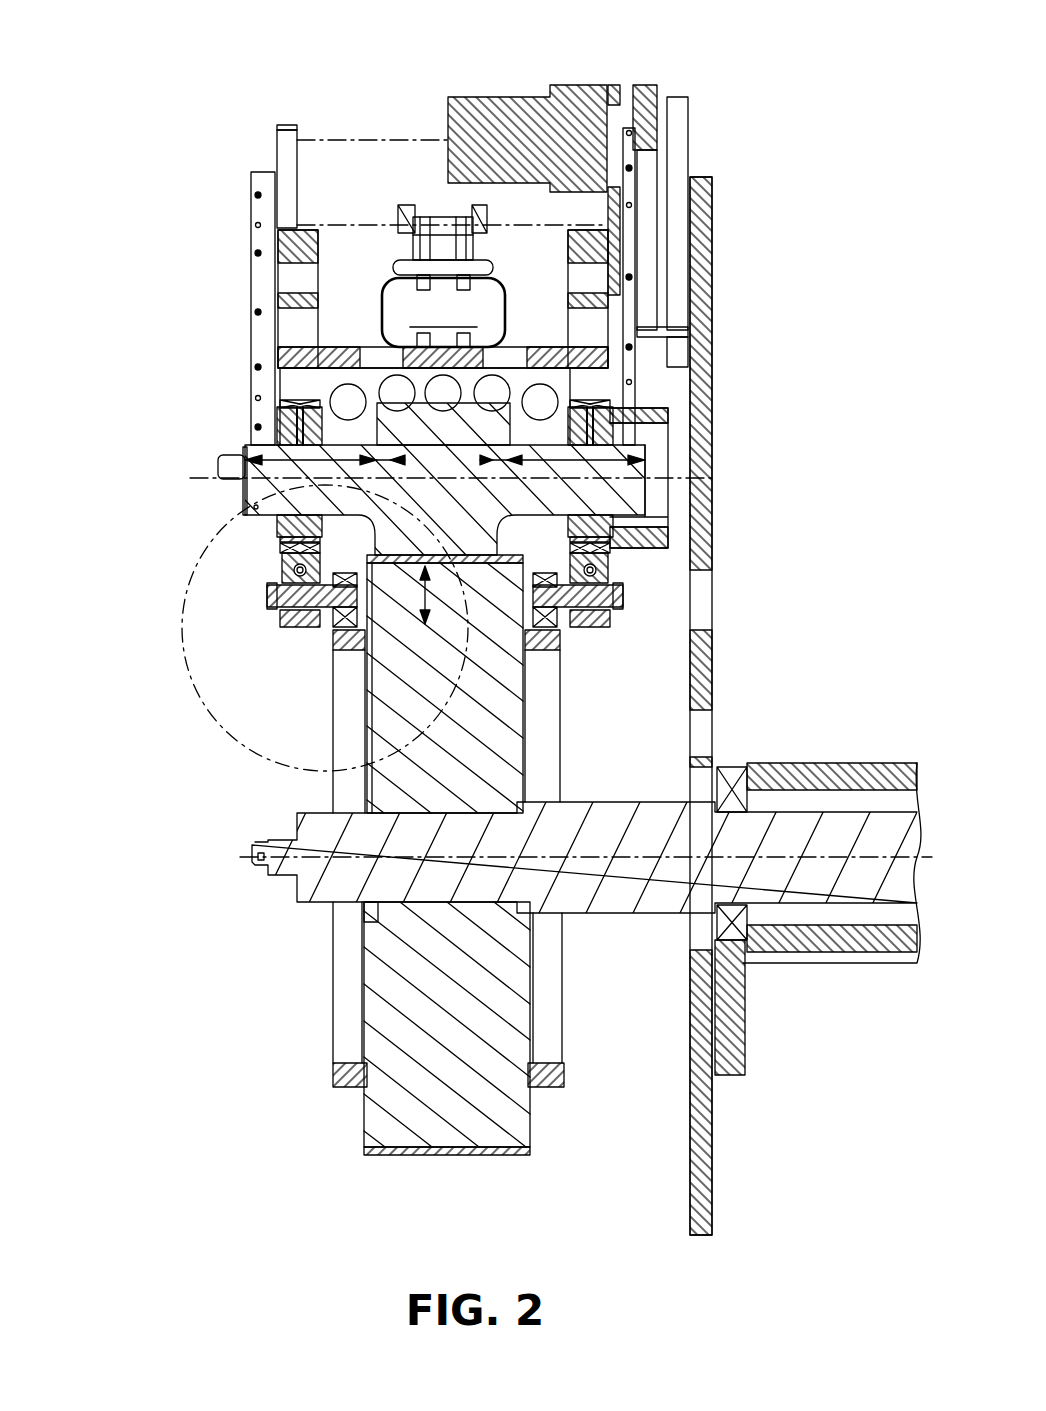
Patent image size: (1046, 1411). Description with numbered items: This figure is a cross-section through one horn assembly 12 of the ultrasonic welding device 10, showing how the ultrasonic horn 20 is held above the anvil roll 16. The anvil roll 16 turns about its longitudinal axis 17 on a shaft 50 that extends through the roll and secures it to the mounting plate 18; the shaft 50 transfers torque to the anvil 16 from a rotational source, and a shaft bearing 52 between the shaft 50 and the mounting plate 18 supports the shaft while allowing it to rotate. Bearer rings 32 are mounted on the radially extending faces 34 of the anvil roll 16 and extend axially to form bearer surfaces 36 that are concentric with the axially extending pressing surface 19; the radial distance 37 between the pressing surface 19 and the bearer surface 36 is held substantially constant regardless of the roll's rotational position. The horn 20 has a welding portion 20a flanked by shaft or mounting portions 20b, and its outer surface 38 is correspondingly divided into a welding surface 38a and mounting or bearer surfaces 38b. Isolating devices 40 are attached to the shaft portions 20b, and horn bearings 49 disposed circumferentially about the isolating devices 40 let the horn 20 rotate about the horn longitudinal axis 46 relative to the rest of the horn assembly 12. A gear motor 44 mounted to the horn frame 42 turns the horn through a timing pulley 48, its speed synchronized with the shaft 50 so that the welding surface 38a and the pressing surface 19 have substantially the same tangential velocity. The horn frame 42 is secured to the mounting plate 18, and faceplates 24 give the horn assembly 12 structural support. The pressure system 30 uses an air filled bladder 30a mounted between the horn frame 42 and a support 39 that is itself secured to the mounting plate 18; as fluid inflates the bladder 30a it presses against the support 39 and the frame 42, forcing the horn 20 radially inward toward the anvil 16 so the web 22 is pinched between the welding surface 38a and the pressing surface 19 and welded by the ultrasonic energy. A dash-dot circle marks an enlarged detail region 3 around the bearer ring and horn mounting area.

The ultrasonic welding device 10 is at (168, 152).
The horn assembly 12 is at (278, 357).
The anvil roll 16 is at (450, 1157).
The longitudinal axis 17 is at (248, 863).
The mounting plate 18 is at (712, 263).
The axially extending pressing surface 19 is at (622, 548).
The ultrasonic horn 20 is at (528, 479).
The welding portion 20a is at (445, 461).
The mounting portions 20b is at (247, 447).
The web 22 is at (243, 490).
The faceplates 24 is at (278, 338).
The pressure system 30 is at (406, 197).
The air filled bladder 30a is at (384, 277).
The bearer rings 32 is at (333, 652).
The radially extending faces 34 is at (366, 1095).
The bearer surfaces 36 is at (330, 605).
The radial distance 37 is at (368, 662).
The outer surface 38 is at (432, 562).
The welding surface 38a is at (640, 490).
The mounting surfaces 38b is at (247, 513).
The support 39 is at (405, 203).
The isolating devices 40 is at (278, 430).
The horn frame 42 is at (278, 273).
The gear motor 44 is at (578, 85).
The horn longitudinal axis 46 is at (215, 470).
The timing pulley 48 is at (648, 175).
The horn bearings 49 is at (278, 395).
The shaft 50 is at (825, 795).
The shaft bearing 52 is at (750, 962).
The detail region shown in FIG. 3 is at (213, 700).